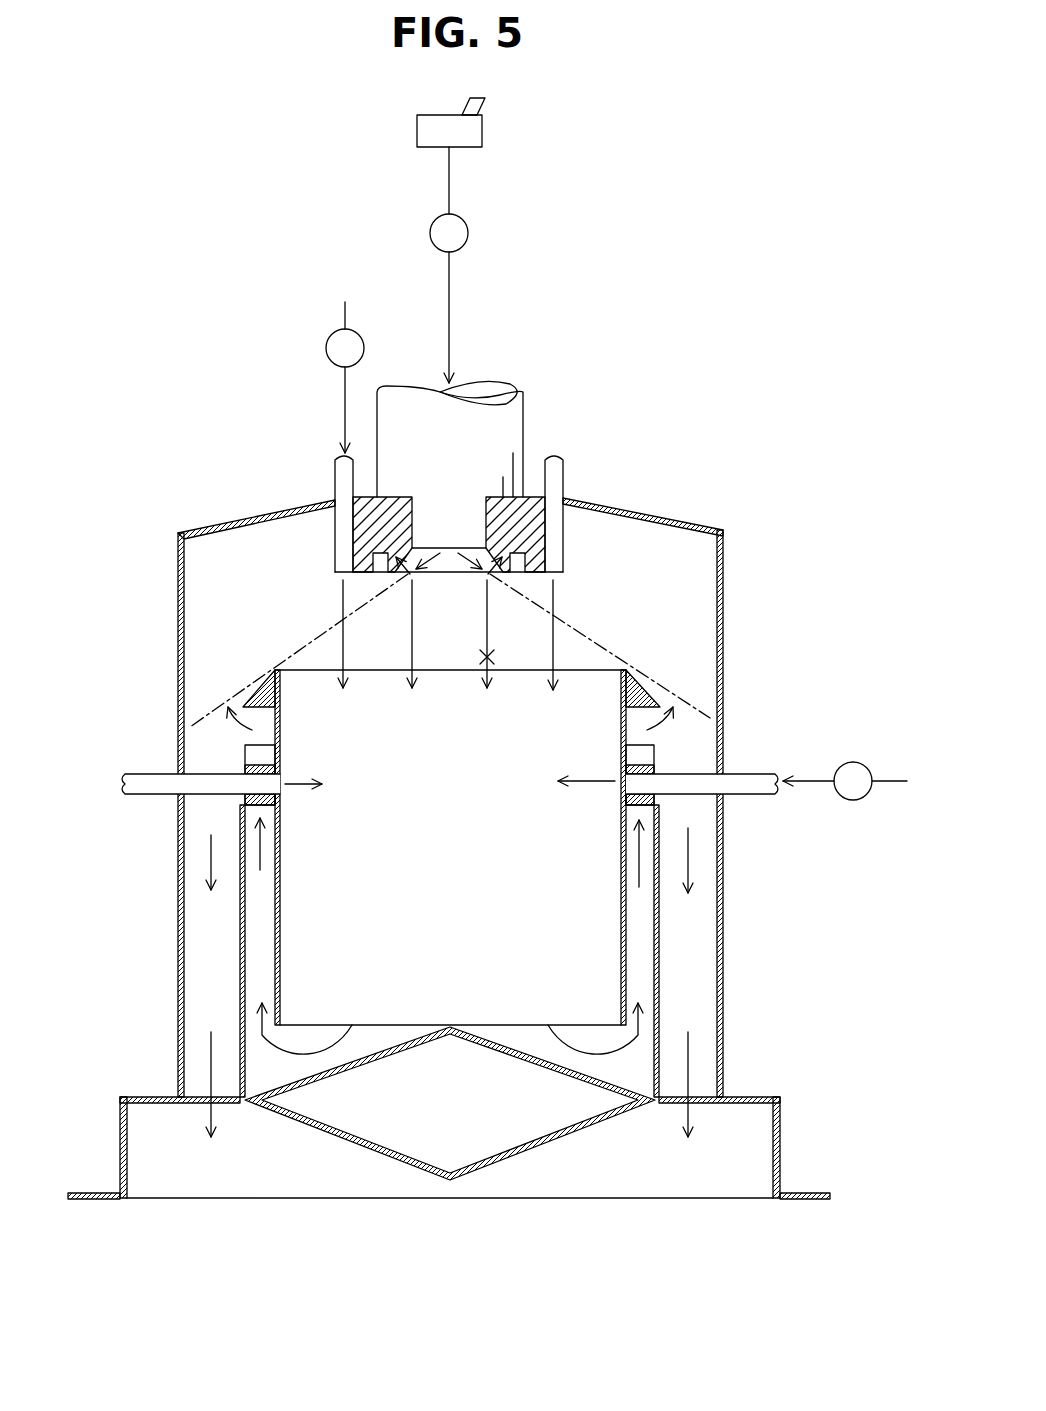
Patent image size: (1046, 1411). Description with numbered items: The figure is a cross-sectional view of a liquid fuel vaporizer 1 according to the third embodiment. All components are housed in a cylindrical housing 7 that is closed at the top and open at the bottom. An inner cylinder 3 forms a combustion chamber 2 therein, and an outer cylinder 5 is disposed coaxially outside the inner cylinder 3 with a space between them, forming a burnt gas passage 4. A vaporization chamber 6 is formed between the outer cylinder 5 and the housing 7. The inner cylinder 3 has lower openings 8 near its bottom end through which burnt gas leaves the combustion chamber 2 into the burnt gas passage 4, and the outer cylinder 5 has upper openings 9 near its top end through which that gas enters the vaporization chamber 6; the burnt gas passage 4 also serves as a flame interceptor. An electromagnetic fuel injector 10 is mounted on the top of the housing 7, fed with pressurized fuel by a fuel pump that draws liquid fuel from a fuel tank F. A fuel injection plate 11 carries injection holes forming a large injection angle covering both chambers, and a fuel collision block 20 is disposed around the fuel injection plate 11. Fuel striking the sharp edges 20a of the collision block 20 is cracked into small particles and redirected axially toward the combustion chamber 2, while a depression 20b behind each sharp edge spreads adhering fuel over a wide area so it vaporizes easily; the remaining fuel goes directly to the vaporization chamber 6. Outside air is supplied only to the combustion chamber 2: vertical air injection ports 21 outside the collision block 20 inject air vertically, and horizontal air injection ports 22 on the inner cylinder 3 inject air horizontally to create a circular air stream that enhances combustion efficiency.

The liquid fuel vaporizer 1 is at (714, 393).
The combustion chamber 2 is at (470, 858).
The inner cylinder 3 is at (617, 908).
The burnt gas passage 4 is at (638, 958).
The outer cylinder 5 is at (658, 948).
The vaporization chamber 6 is at (700, 898).
The housing 7 is at (723, 837).
The lower openings 8 is at (280, 1038).
The upper openings 9 is at (262, 748).
The electromagnetic fuel injector 10 is at (500, 430).
The fuel injection plate 11 is at (533, 523).
The fuel collision block 20 is at (450, 582).
The sharp edges 20a is at (408, 574).
The depression 20b is at (385, 574).
The vertical air injection ports 21 is at (343, 550).
The horizontal air injection ports 22 is at (205, 773).
The fuel tank F is at (482, 131).